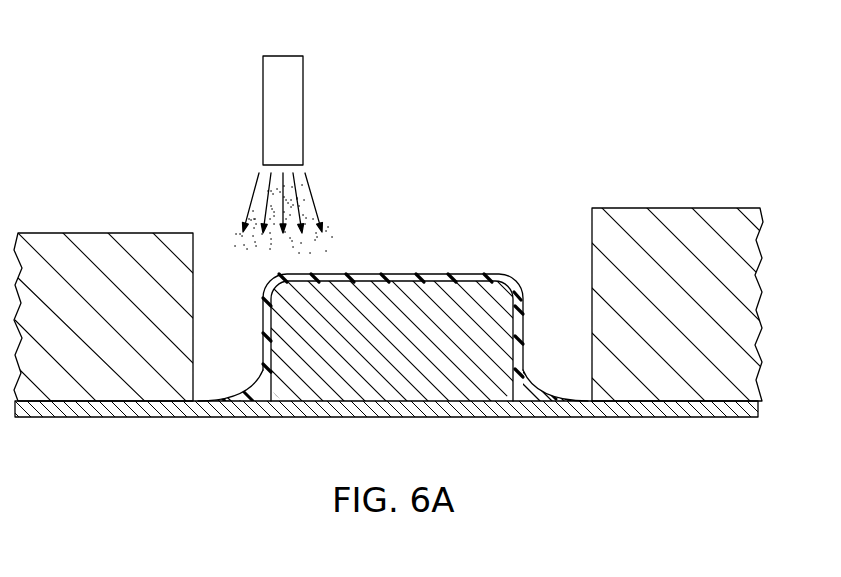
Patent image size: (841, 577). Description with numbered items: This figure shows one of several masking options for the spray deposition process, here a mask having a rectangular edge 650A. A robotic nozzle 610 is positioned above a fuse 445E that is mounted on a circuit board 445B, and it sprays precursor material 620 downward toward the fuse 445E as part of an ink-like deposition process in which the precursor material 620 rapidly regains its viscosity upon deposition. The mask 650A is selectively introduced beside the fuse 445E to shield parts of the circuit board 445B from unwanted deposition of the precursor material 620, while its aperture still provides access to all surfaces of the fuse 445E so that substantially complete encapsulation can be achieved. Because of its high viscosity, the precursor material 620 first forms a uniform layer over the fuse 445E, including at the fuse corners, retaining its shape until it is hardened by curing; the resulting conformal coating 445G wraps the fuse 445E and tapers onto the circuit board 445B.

The robotic nozzle 610 is at (262, 104).
The precursor material 620 is at (341, 197).
The mask with rectangular edge 650A is at (132, 318).
The fuse 445E is at (420, 354).
The conformal coating layer 445G is at (229, 393).
The circuit board 445B is at (493, 411).